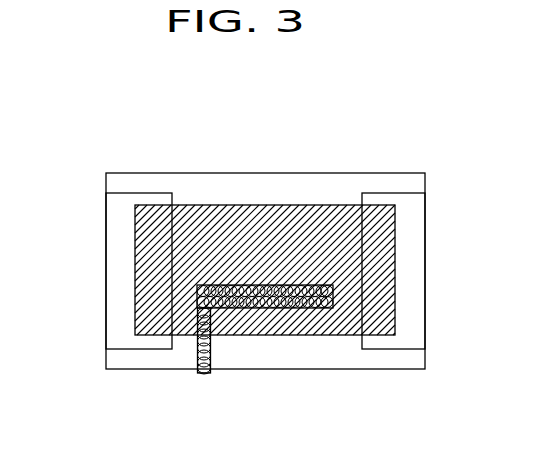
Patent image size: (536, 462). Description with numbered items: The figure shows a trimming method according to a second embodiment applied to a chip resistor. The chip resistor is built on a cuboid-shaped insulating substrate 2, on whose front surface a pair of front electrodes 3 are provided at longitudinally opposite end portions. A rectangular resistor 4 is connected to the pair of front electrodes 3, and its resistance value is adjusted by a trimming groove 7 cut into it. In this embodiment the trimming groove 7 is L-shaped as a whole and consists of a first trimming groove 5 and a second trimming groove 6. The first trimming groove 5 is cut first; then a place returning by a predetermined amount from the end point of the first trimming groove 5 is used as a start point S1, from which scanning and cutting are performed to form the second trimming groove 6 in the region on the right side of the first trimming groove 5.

The insulating substrate 2 is at (155, 175).
The front electrode 3 is at (113, 266).
The resistor 4 is at (326, 206).
The first trimming groove 5 is at (223, 320).
The second trimming groove 6 is at (267, 312).
The trimming groove 7 is at (265, 366).
The start point S1 is at (200, 374).